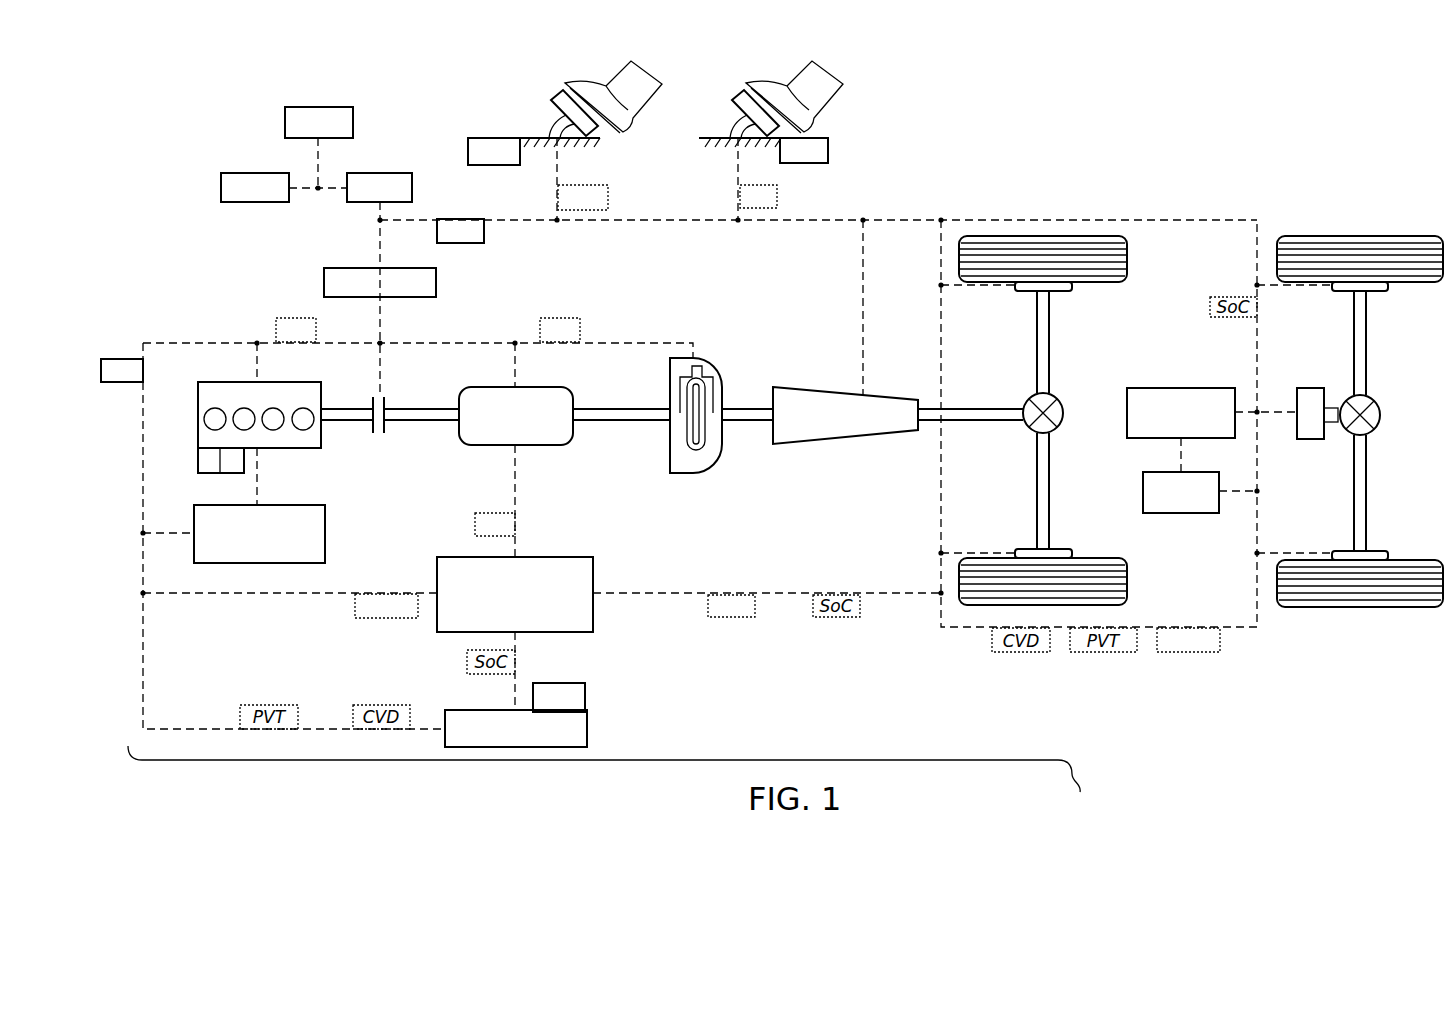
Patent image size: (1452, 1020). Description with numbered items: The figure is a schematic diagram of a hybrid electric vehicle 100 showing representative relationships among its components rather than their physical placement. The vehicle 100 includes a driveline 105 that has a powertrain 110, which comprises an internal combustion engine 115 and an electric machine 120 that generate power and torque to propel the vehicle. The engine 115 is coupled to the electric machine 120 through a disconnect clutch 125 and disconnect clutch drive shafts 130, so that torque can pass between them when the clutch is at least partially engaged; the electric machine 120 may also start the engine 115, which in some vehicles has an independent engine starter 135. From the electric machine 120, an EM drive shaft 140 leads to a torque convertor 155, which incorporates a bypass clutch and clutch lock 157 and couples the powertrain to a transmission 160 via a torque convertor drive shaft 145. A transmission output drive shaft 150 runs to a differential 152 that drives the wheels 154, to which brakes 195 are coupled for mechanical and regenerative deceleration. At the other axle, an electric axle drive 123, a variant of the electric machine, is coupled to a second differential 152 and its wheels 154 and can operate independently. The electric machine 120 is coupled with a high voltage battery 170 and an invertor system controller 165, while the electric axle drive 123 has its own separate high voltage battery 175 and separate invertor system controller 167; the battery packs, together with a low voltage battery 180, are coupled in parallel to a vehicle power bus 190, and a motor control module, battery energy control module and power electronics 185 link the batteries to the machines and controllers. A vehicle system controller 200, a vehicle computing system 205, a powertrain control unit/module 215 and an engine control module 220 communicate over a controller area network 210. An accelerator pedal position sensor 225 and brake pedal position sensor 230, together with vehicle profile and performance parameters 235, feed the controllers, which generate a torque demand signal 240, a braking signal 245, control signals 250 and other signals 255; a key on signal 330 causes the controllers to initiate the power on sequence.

The hybrid electric vehicle 100 is at (1050, 162).
The driveline 105 is at (625, 781).
The powertrain 110 is at (625, 505).
The internal combustion engine 115 is at (321, 445).
The electric machine 120 is at (535, 447).
The electric axle drive 123 is at (1310, 388).
The disconnect clutch 125 is at (386, 430).
The disconnect clutch drive shaft 130 is at (355, 397).
The independent engine starter 135 is at (200, 474).
The EM drive shaft 140 is at (645, 407).
The torque convertor drive shaft 145 is at (748, 406).
The transmission output drive shaft 150 is at (997, 422).
The differential 152 is at (1062, 408).
The wheels 154 is at (1085, 283).
The torque convertor 155 is at (722, 455).
The bypass clutch and clutch lock 157 is at (712, 392).
The transmission 160 is at (822, 445).
The invertor system controller 165 is at (585, 688).
The separate invertor system controller 167 is at (1198, 513).
The high voltage battery 170 is at (587, 726).
The separate high voltage battery 175 is at (1190, 388).
The low voltage battery 180 is at (225, 474).
The motor control module / battery energy control module / power electronics 185 is at (593, 570).
The vehicle power bus 190 is at (982, 219).
The brakes 195 is at (1025, 292).
The vehicle system controller 200 is at (350, 202).
The vehicle computing system 205 is at (247, 204).
The controller area network 210 is at (484, 236).
The powertrain control unit/module 215 is at (436, 283).
The engine control module 220 is at (325, 555).
The accelerator pedal position and motion sensor 225 is at (548, 122).
The brake pedal position and motion sensor 230 is at (728, 122).
The vehicle profile and performance parameters 235 is at (338, 107).
The torque demand signal 240 is at (608, 198).
The braking signal 245 is at (777, 201).
The control signal 250 is at (285, 318).
The other signal 255 is at (582, 325).
The key on signal 330 is at (418, 616).